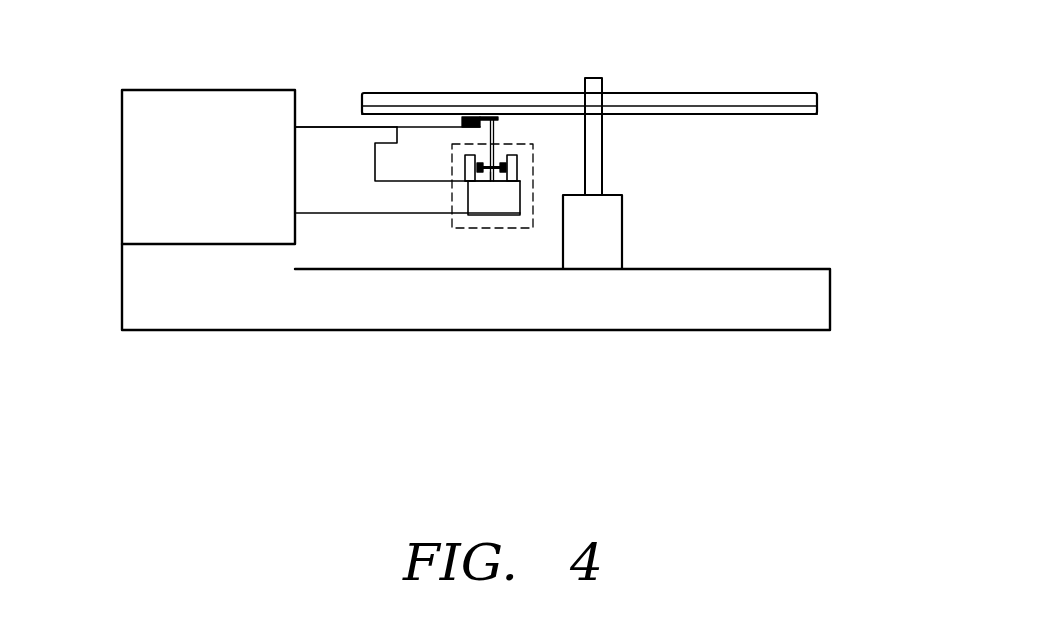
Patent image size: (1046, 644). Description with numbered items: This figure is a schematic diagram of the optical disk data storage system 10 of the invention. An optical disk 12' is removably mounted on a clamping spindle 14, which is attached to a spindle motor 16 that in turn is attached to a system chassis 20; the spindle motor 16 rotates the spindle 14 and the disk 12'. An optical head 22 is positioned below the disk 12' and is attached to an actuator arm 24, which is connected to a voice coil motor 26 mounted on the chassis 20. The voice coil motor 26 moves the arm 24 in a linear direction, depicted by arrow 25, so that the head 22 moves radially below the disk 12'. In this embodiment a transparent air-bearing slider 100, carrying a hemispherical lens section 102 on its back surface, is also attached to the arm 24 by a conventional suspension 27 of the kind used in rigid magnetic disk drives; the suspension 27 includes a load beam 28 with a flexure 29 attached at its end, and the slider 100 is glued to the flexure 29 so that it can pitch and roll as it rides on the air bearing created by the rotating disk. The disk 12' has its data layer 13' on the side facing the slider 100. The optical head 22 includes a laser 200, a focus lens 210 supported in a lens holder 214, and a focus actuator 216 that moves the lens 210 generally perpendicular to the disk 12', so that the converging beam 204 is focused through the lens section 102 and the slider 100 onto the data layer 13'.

The optical disk data storage system 10 is at (258, 382).
The optical disk 12' is at (635, 89).
The data layer 13' is at (627, 135).
The clamping spindle 14 is at (590, 140).
The spindle motor 16 is at (610, 230).
The system chassis 20 is at (762, 315).
The optical head 22 is at (520, 197).
The actuator arm 24 is at (345, 198).
The arrow 25 is at (108, 237).
The voice coil motor 26 is at (143, 102).
The suspension 27 is at (362, 127).
The load beam 28 is at (406, 125).
The flexure 29 is at (470, 117).
The transparent air-bearing slider 100 is at (497, 117).
The hemispherical lens section 102 is at (500, 127).
The laser 200 is at (523, 193).
The converging beam 204 is at (520, 152).
The focus lens 210 is at (486, 190).
The lens holder 214 is at (472, 190).
The focus actuator 216 is at (512, 167).